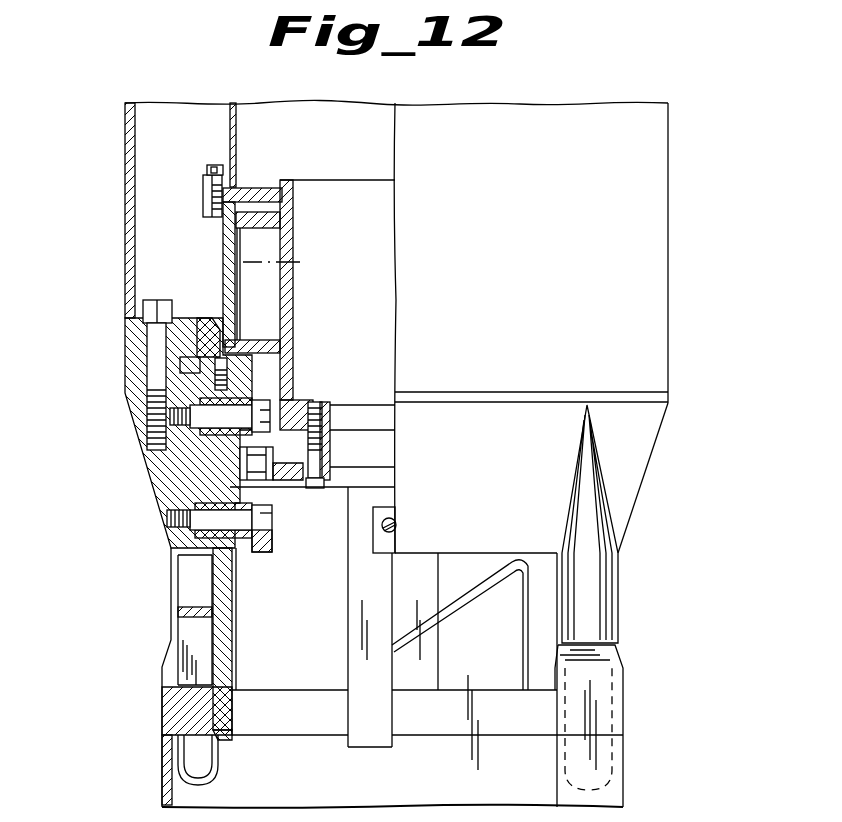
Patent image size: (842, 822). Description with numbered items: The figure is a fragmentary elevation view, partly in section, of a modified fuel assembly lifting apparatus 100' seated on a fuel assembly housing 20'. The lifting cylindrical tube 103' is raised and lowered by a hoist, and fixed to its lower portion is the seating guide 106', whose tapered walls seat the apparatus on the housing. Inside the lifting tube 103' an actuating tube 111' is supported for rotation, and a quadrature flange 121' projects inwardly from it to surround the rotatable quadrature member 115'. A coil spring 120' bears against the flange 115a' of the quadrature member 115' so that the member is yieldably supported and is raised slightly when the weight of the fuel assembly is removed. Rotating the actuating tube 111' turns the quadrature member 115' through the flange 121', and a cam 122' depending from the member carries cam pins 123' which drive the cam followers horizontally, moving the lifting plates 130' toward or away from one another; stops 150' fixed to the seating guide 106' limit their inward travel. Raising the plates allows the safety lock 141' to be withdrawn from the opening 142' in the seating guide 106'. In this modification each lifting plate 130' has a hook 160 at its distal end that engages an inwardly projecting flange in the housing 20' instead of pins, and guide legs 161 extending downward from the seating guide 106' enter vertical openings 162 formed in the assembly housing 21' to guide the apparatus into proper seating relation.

The fuel assembly lifting apparatus 100' is at (350, 106).
The lifting cylindrical tube 103' is at (95, 210).
The seating guide 106' is at (170, 433).
The actuating tube 111' is at (207, 160).
The quadrature flange 121' is at (264, 175).
The quadrature member 115' is at (309, 290).
The flange of quadrature member 115a' is at (301, 220).
The coil spring 120' is at (295, 284).
The opening 142' is at (183, 364).
The safety lock 141' is at (146, 354).
The stop 150' is at (260, 455).
The cam 122' is at (312, 444).
The cam pin 123' is at (289, 483).
The lifting plate 130' is at (418, 628).
The fuel assembly housing 20' is at (629, 606).
The vertical opening 162 is at (177, 702).
The guide leg 161 is at (213, 773).
The hook 160 is at (218, 735).
The assembly housing 21' is at (138, 772).